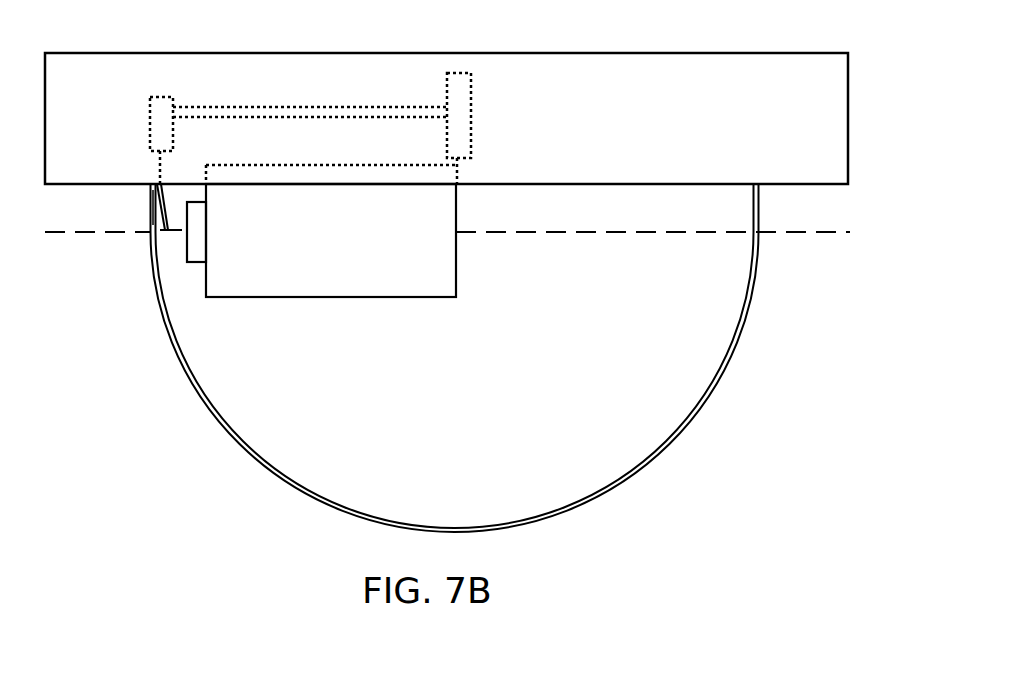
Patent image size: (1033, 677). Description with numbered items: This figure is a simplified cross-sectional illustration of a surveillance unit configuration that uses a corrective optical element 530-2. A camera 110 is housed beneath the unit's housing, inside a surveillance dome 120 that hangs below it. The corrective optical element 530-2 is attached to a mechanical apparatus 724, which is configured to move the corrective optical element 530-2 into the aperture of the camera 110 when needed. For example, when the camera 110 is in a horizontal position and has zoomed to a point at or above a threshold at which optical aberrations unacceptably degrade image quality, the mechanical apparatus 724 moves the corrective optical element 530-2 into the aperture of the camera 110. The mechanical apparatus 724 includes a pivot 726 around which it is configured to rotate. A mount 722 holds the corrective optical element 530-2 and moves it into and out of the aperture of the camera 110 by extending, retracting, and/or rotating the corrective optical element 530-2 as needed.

The camera 110 is at (456, 297).
The surveillance dome 120 is at (720, 382).
The corrective optical element 530-2 is at (155, 213).
The mount 722 is at (160, 177).
The mechanical apparatus 724 is at (208, 107).
The pivot 726 is at (470, 127).